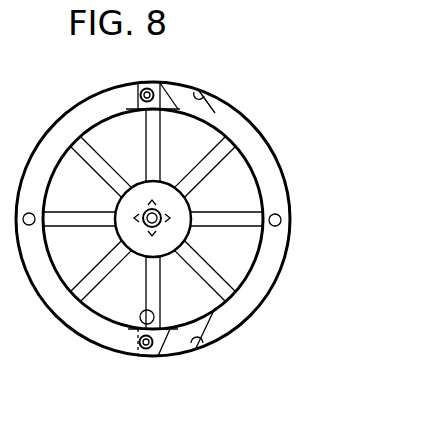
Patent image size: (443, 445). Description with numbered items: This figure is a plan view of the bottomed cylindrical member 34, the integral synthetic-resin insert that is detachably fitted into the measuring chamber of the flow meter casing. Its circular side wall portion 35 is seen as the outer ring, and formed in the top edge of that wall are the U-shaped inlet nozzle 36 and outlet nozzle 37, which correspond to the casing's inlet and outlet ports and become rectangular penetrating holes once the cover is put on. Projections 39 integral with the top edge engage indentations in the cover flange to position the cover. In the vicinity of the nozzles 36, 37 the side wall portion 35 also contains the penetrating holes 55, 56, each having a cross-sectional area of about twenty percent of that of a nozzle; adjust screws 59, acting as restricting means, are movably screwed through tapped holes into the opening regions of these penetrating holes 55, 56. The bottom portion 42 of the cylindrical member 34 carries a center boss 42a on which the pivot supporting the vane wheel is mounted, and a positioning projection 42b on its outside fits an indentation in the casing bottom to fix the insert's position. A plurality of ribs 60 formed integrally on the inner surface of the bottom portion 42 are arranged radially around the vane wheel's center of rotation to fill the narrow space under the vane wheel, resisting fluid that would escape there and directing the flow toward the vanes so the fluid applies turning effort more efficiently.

The bottomed cylindrical member 34 is at (271, 288).
The side wall portion 35 is at (274, 171).
The inlet nozzle 36 is at (197, 350).
The outlet nozzle 37 is at (193, 92).
The projections 39 is at (288, 217).
The bottom portion 42 is at (244, 202).
The center boss 42a is at (187, 230).
The positioning projection 42b is at (156, 314).
The penetrating hole 55 is at (142, 352).
The penetrating hole 56 is at (143, 79).
The adjust screws 59 is at (141, 104).
The ribs 60 is at (148, 280).